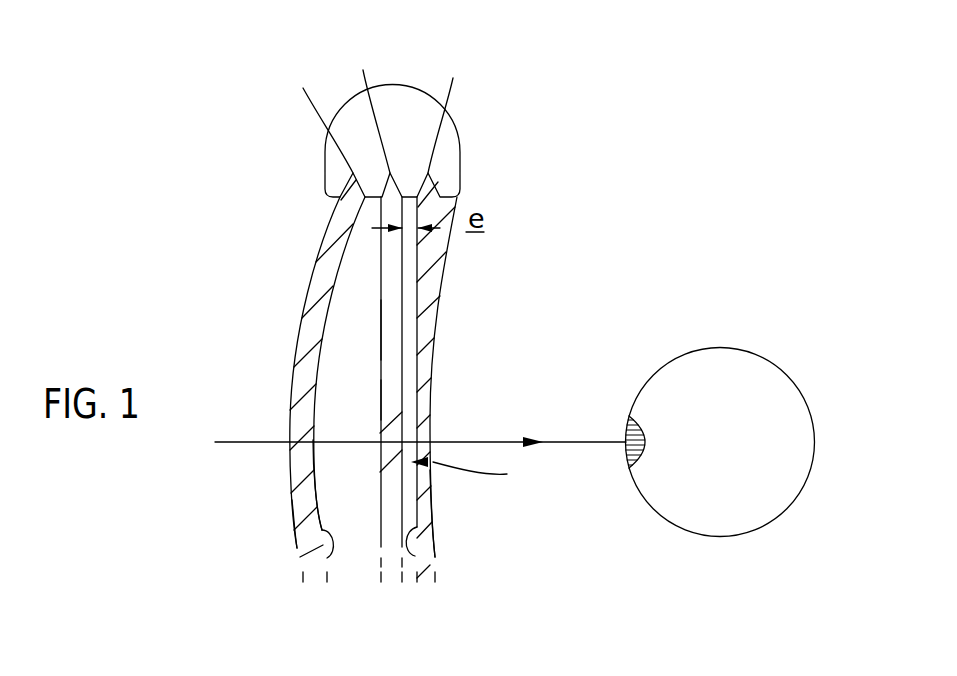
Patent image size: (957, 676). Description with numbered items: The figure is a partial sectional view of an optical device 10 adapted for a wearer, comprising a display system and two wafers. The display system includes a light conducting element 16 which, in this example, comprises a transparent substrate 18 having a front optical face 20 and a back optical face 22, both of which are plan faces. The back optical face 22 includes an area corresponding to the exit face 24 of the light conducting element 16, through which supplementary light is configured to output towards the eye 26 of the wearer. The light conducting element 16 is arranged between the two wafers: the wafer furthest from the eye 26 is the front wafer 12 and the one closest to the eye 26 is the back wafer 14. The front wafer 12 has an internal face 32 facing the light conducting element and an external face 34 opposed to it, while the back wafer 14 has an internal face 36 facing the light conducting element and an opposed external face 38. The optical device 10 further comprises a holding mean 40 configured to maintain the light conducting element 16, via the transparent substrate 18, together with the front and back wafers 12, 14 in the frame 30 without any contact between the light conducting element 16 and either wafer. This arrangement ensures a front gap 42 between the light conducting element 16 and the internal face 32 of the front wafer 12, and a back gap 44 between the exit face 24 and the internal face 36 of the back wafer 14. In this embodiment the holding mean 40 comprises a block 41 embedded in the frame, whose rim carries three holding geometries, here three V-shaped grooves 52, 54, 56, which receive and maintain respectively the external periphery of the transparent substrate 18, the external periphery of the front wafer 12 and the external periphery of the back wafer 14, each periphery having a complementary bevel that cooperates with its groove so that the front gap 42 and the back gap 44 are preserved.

The optical device 10 is at (550, 96).
The front wafer 12 is at (352, 240).
The back wafer 14 is at (432, 253).
The light conducting element 16 is at (381, 456).
The transparent substrate 18 is at (392, 297).
The front optical face 20 is at (381, 327).
The back optical face 22 is at (403, 303).
The exit face 24 is at (402, 428).
The eye 26 is at (795, 418).
The frame 30 is at (344, 95).
The internal face of the front wafer 32 is at (327, 558).
The external face of the front wafer 34 is at (297, 514).
The internal face of the back wafer 36 is at (415, 556).
The external face of the back wafer 38 is at (431, 500).
The holding mean 40 is at (447, 140).
The block 41 is at (444, 158).
The front gap 42 is at (364, 410).
The back gap 44 is at (472, 475).
The groove 52 is at (369, 107).
The groove 54 is at (320, 115).
The groove 56 is at (446, 110).